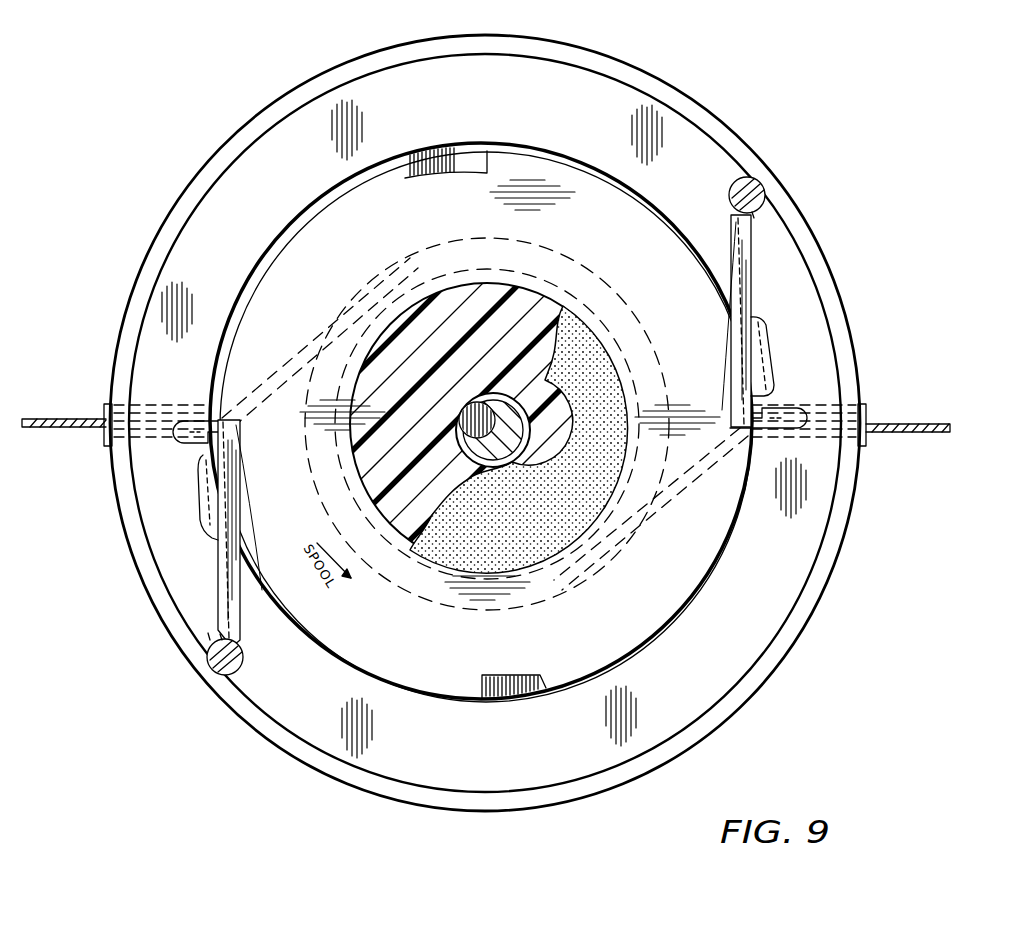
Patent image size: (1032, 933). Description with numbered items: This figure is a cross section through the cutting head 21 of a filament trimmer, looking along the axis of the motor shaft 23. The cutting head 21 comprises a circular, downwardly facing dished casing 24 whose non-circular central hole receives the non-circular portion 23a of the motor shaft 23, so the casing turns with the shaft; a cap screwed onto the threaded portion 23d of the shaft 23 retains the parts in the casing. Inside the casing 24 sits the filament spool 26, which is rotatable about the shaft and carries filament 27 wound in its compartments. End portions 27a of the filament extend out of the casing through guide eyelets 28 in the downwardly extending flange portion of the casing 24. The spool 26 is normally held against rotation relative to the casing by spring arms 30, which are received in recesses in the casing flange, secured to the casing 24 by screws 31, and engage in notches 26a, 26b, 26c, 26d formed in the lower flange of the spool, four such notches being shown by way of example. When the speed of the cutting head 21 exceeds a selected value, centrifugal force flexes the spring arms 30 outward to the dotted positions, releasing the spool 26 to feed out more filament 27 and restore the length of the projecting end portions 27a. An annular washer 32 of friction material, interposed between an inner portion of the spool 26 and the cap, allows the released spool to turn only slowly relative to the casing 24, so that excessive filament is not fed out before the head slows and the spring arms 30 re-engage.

The cutting head 21 is at (182, 186).
The casing 24 is at (724, 124).
The filament spool 26 is at (553, 186).
The notch 26a is at (238, 424).
The notch 26b is at (492, 160).
The notch 26c is at (735, 392).
The notch 26d is at (490, 694).
The filament 27 is at (296, 346).
The end portions of the filaments 27a is at (64, 416).
The guide eyelets 28 is at (106, 430).
The motor shaft 23 is at (515, 428).
The non-circular portion of the motor shaft 23a is at (512, 346).
The threaded portion of the shaft 23d is at (545, 380).
The spring arms 30 is at (238, 470).
The screws 31 is at (240, 660).
The annular washer 32 is at (505, 540).